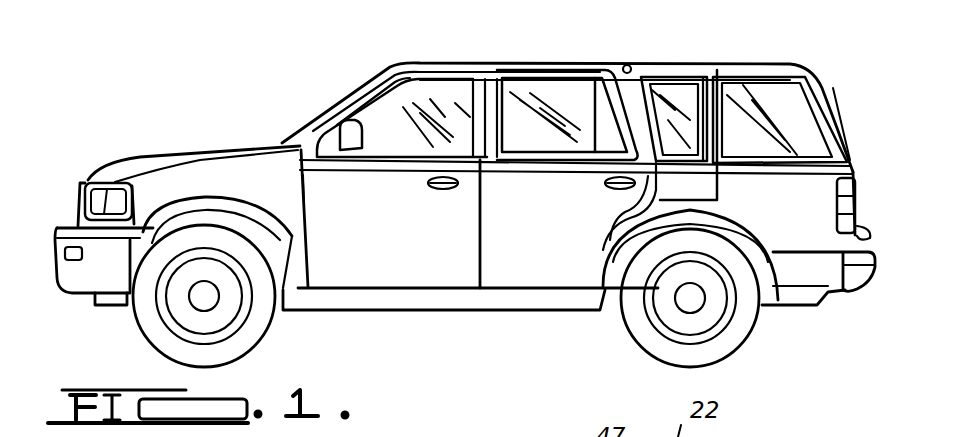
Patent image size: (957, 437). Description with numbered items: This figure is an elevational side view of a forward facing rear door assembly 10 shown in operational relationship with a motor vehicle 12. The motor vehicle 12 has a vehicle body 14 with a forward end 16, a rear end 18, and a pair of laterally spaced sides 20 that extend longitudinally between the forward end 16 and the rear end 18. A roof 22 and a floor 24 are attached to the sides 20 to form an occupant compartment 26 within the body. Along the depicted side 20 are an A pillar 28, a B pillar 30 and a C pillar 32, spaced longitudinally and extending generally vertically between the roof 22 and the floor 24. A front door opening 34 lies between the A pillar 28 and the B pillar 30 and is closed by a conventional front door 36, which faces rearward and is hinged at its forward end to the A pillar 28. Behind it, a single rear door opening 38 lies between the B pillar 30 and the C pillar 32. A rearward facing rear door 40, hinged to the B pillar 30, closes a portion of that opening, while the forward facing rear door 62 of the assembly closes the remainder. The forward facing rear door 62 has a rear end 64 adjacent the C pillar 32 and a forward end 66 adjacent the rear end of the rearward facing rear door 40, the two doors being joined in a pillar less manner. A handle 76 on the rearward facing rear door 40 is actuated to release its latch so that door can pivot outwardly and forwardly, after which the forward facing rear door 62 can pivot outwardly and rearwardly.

The forward facing rear door assembly 10 is at (680, 47).
The motor vehicle 12 is at (232, 143).
The vehicle body 14 is at (857, 177).
The forward end 16 is at (87, 174).
The rear end 18 is at (838, 221).
The sides 20 is at (259, 162).
The roof 22 is at (512, 63).
The floor 24 is at (410, 300).
The occupant compartment 26 is at (557, 88).
The A pillar 28 is at (328, 128).
The B pillar 30 is at (470, 116).
The C pillar 32 is at (704, 132).
The front door opening 34 is at (304, 190).
The front door 36 is at (360, 263).
The rear door opening 38 is at (628, 64).
The rearward facing rear door 40 is at (510, 272).
The forward facing rear door 62 is at (648, 113).
The rear end 64 is at (720, 133).
The forward end 66 is at (622, 220).
The handle 76 is at (603, 196).